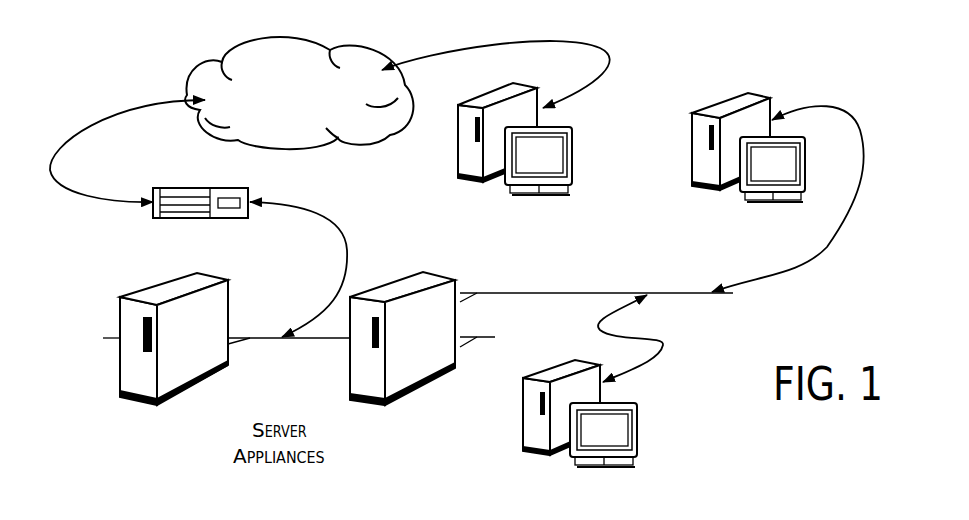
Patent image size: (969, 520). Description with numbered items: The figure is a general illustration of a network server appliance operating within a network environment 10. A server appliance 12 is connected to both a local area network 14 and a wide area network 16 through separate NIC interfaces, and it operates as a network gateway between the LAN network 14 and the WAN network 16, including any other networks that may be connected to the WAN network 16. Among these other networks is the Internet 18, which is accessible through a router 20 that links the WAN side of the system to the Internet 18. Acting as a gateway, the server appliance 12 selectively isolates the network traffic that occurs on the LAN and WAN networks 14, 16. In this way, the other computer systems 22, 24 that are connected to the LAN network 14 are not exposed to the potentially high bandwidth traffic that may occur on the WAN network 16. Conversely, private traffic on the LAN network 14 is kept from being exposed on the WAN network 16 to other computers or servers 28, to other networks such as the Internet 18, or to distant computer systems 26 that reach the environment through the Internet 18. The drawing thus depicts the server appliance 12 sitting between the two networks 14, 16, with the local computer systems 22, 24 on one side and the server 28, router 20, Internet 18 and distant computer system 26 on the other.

The network environment 10 is at (717, 440).
The server appliance 12 is at (415, 388).
The local area network (LAN) 14 is at (547, 293).
The wide area network (WAN) 16 is at (312, 340).
The Internet 18 is at (343, 138).
The router 20 is at (178, 219).
The computer system 22 is at (523, 435).
The computer system 24 is at (690, 176).
The distant computer system 26 is at (573, 148).
The server 28 is at (192, 390).